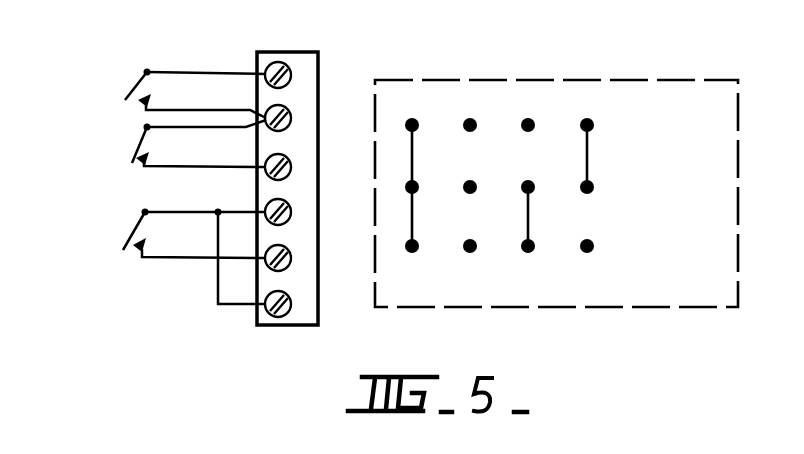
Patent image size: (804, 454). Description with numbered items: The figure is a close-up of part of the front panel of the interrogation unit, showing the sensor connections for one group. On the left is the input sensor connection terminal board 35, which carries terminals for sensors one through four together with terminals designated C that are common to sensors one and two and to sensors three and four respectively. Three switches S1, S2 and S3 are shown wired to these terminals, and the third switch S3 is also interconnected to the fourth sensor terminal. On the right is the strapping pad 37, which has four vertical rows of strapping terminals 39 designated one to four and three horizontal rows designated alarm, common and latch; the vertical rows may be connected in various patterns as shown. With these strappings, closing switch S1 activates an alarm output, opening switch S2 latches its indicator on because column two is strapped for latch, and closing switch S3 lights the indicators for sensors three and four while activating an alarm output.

The input sensor connection terminal board 35 is at (313, 53).
The strapping pad 37 is at (498, 78).
The strapping terminals 39 is at (406, 121).
The switch S1 is at (171, 94).
The switch S2 is at (171, 143).
The switch S3 is at (171, 257).